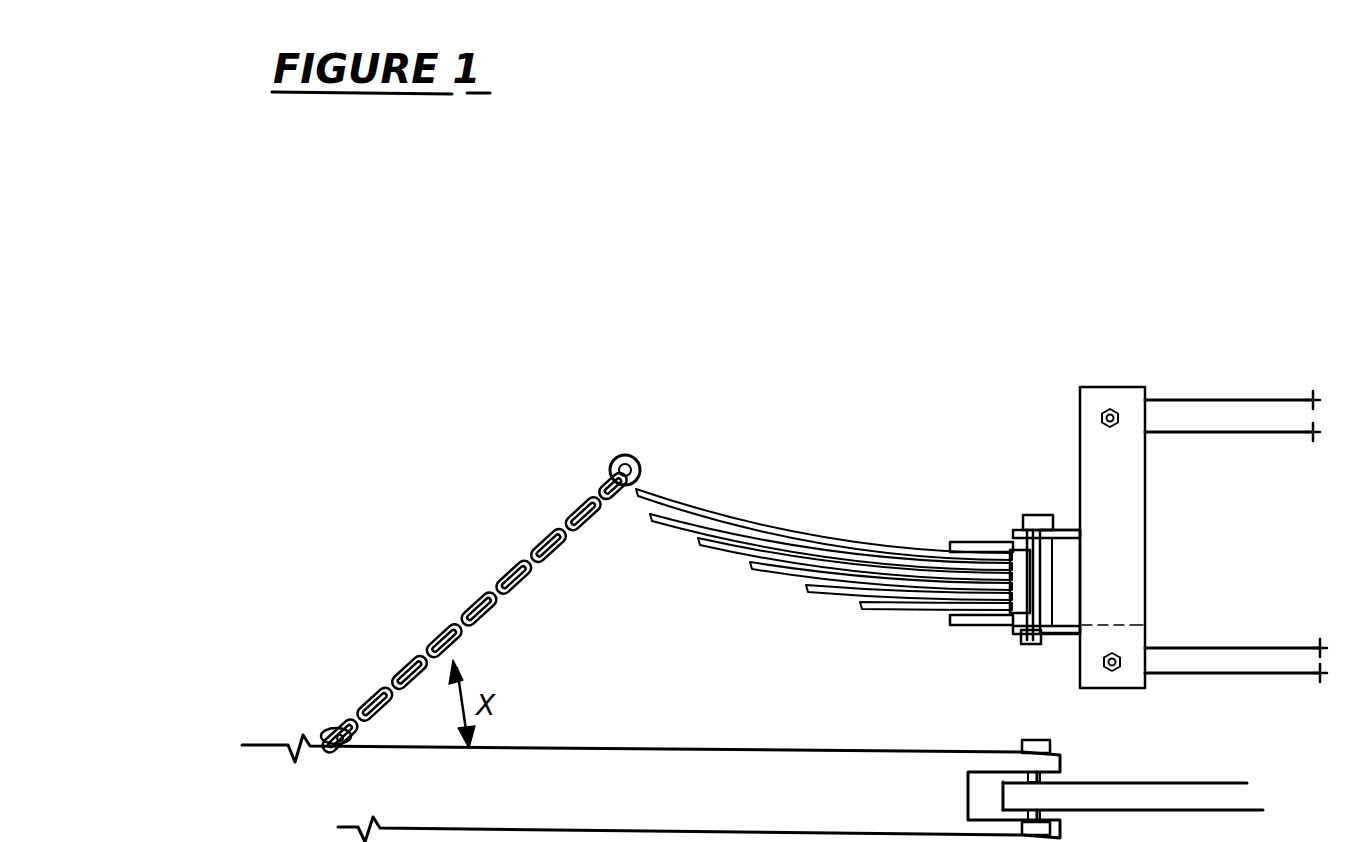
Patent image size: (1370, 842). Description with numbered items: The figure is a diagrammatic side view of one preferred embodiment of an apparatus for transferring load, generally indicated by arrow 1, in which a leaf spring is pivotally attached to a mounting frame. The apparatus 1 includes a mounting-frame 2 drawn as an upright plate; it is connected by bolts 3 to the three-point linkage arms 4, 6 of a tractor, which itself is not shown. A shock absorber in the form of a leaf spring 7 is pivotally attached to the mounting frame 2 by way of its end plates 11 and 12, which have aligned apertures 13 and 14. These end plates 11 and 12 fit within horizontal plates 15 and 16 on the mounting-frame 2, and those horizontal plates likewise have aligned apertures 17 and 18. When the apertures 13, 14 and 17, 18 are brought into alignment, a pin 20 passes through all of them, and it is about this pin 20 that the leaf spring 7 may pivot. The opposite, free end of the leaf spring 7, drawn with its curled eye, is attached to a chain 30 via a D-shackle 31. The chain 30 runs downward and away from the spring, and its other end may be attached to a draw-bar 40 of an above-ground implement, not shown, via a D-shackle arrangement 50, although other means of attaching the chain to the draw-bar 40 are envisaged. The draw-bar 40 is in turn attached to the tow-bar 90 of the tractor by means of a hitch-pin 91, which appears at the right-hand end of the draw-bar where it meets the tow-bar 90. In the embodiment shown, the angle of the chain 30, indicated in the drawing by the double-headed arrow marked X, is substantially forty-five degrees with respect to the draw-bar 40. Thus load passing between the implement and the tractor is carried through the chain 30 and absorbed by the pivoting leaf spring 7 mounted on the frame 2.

The apparatus for transferring load 1 is at (1135, 243).
The mounting-frame 2 is at (1120, 532).
The bolts 3 is at (1117, 406).
The three-point linkage arm 4 is at (1212, 668).
The three-point linkage arm 6 is at (1225, 420).
The leaf spring 7 is at (850, 542).
The end plate 11 is at (990, 625).
The end plate 12 is at (992, 542).
The aperture 13 is at (1060, 581).
The aperture 14 is at (1063, 582).
The horizontal plate 15 is at (1070, 530).
The horizontal plate 16 is at (1062, 636).
The aperture 17 is at (1020, 581).
The aperture 18 is at (1022, 645).
The pin 20 is at (1034, 514).
The chain 30 is at (487, 586).
The D-shackle 31 is at (604, 478).
The draw-bar 40 is at (702, 768).
The D-shackle arrangement 50 is at (337, 727).
The tow-bar 90 is at (1158, 804).
The hitch-pin 91 is at (1052, 742).